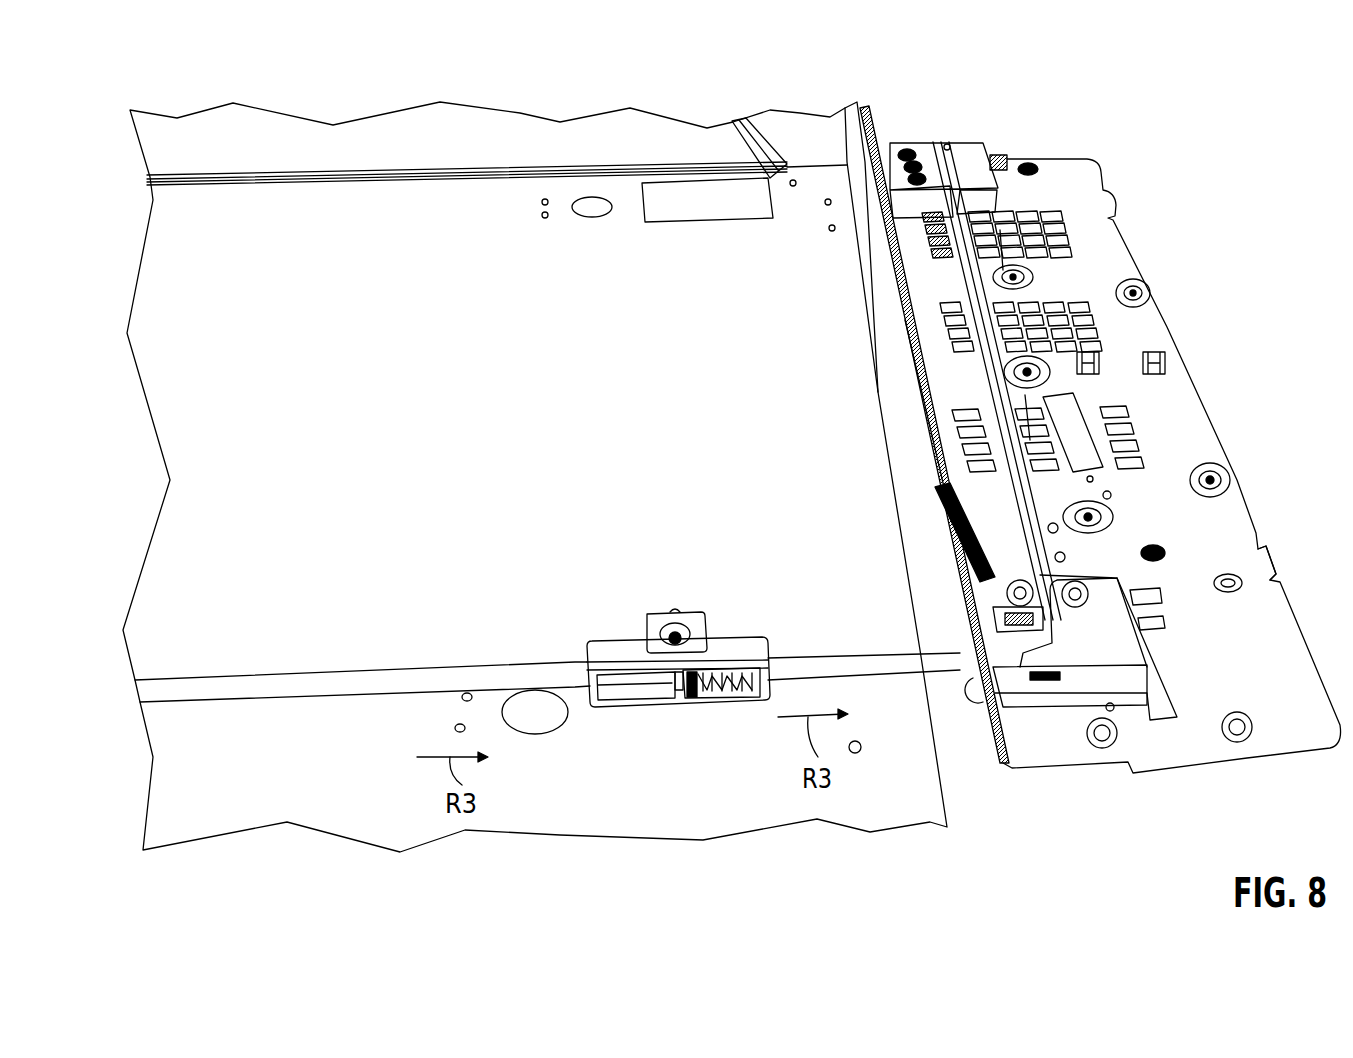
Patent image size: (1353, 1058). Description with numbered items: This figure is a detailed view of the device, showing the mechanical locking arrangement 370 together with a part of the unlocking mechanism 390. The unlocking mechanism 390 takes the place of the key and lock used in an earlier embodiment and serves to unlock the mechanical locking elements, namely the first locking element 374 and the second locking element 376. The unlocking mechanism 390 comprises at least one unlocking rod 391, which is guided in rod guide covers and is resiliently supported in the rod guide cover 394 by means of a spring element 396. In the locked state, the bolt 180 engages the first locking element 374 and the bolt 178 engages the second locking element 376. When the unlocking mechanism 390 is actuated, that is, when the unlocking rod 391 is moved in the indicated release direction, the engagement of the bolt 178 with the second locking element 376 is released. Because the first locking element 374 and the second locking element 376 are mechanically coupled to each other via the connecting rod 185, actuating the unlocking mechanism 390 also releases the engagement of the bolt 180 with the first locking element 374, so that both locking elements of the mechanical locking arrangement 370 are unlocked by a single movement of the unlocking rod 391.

The mechanical locking arrangement 370 is at (1107, 148).
The first locking element 374 is at (901, 141).
The second locking element 376 is at (1087, 650).
The bolt 180 is at (906, 151).
The connecting rod 185 is at (1027, 430).
The bolt 178 is at (1023, 623).
The unlocking mechanism 390 is at (822, 645).
The unlocking rod 391 is at (280, 687).
The rod guide cover 394 is at (612, 650).
The spring element 396 is at (713, 688).